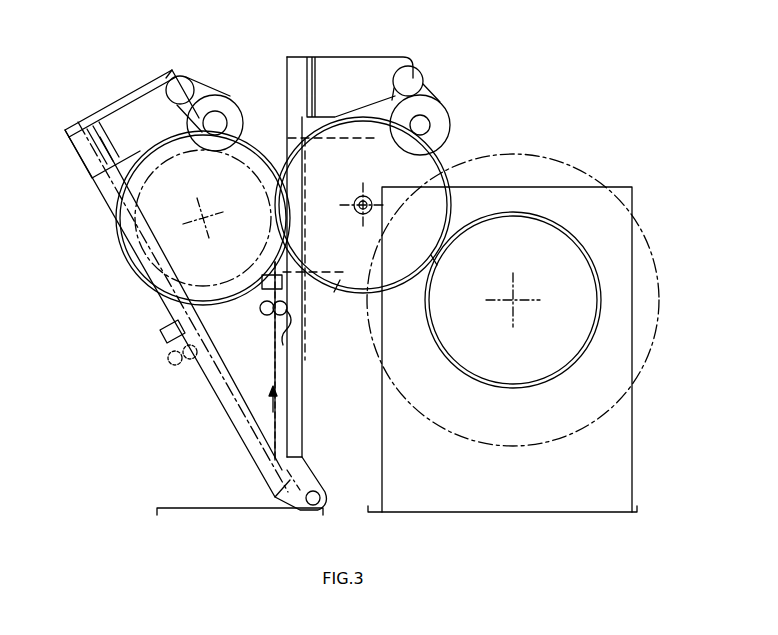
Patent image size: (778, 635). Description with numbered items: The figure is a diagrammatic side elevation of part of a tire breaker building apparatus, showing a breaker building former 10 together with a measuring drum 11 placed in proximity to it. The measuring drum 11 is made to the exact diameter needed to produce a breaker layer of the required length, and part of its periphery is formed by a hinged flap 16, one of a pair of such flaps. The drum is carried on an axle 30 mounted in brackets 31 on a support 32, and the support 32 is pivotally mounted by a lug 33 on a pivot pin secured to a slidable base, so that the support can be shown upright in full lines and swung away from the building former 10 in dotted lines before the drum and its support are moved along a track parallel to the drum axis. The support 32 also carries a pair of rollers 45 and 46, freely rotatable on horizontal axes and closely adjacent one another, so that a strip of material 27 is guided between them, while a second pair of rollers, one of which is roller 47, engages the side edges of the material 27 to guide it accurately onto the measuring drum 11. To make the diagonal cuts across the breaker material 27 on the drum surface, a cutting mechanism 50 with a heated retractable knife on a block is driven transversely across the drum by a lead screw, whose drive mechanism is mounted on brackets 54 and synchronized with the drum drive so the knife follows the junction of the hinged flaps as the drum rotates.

The breaker building former 10 is at (497, 372).
The measuring drum 11 is at (142, 292).
The hinged flap 16 is at (434, 260).
The strip of material 27 is at (273, 372).
The axle 30 is at (359, 199).
The brackets 31 is at (338, 291).
The support 32 is at (300, 351).
The lug 33 is at (305, 472).
The roller 45 is at (261, 312).
The roller 46 is at (283, 338).
The roller 47 is at (270, 275).
The cutting mechanism 50 is at (439, 80).
The brackets 54 is at (357, 68).